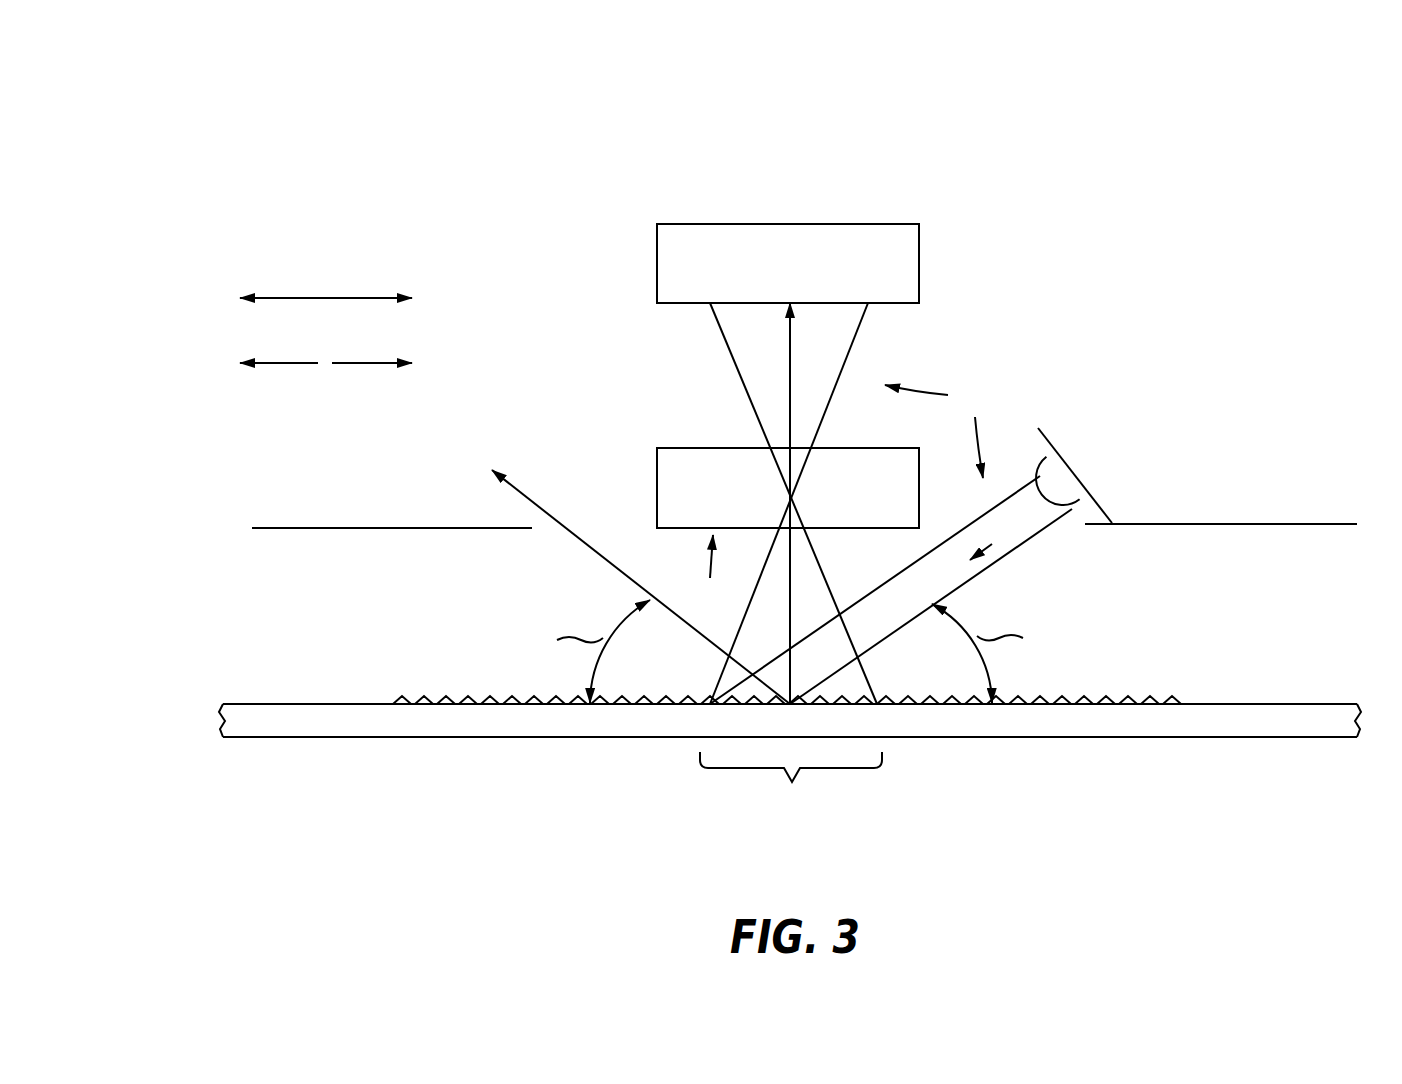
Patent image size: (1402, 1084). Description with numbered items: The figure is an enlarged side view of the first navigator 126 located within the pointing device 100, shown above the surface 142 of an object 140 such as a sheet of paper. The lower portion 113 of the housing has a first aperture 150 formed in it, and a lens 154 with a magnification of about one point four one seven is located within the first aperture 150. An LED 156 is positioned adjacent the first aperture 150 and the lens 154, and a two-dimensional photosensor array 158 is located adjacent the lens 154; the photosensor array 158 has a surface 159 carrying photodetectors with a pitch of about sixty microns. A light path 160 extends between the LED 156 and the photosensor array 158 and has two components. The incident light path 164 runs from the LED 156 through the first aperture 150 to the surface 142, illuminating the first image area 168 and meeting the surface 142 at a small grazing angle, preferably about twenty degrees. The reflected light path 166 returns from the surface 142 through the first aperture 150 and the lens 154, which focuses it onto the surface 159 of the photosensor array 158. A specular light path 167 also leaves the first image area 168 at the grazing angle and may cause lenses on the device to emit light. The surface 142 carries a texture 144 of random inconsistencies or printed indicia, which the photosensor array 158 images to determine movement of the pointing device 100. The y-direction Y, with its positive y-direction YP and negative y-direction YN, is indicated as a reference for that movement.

The pointing device 100 is at (500, 140).
The lower portion 113 is at (1288, 524).
The first navigator 126 is at (825, 198).
The object 140 is at (205, 723).
The surface 142 is at (253, 704).
The texture 144 is at (447, 700).
The first aperture 150 is at (708, 578).
The lens 154 is at (657, 492).
The LED 156 is at (1073, 473).
The two-dimensional photosensor array 158 is at (920, 261).
The surface 159 is at (900, 303).
The light path 160 is at (942, 426).
The incident light path 164 is at (1008, 532).
The reflected light path 166 is at (740, 378).
The specular light path 167 is at (543, 508).
The first image area 168 is at (791, 790).
The y-direction Y is at (327, 297).
The negative y-direction YN is at (300, 364).
The positive y-direction YP is at (350, 364).